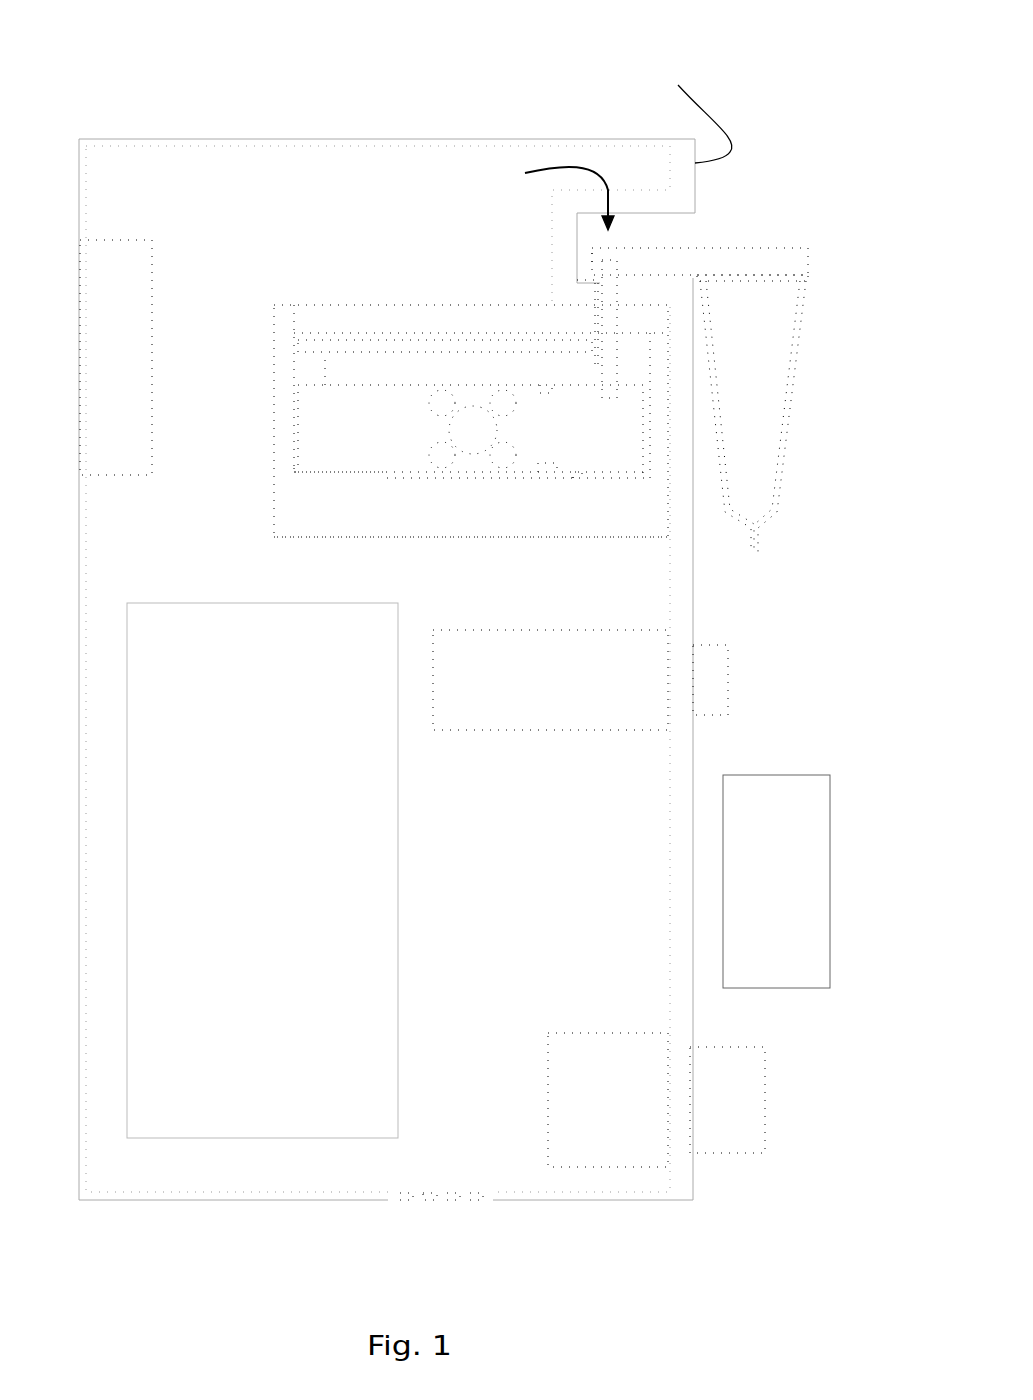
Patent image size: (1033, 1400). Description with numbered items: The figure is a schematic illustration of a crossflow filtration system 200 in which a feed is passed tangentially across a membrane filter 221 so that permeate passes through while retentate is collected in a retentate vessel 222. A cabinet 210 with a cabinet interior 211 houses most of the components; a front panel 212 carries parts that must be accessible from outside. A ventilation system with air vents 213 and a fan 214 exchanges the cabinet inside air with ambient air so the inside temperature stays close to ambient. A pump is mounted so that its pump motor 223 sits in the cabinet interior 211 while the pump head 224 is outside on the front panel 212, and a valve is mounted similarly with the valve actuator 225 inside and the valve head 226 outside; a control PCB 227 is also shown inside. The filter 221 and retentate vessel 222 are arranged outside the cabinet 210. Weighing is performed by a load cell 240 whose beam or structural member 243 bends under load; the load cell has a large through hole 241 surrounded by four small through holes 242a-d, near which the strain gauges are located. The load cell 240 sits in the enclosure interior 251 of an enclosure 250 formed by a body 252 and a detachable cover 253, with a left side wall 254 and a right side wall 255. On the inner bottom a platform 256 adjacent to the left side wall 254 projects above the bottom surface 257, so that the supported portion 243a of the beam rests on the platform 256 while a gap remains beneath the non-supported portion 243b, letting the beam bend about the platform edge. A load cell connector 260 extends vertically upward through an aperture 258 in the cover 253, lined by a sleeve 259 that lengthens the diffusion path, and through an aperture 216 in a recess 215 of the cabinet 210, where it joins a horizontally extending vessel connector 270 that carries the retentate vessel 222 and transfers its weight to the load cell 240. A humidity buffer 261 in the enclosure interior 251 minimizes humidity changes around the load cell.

The crossflow filtration system 200 is at (85, 27).
The cabinet 210 is at (300, 138).
The cabinet interior 211 is at (555, 902).
The front panel 212 is at (690, 107).
The air vents 213 is at (450, 1202).
The fan 214 is at (92, 282).
The recess 215 is at (537, 198).
The aperture 216 is at (617, 283).
The filter 221 is at (776, 881).
The retentate vessel 222 is at (788, 395).
The pump motor 223 is at (550, 680).
The pump head 224 is at (729, 683).
The valve actuator 225 is at (608, 1100).
The valve head 226 is at (727, 1100).
The control PCB 227 is at (262, 870).
The load cell 240 is at (325, 385).
The large through hole 241 is at (450, 430).
The small through holes 242a-d is at (441, 404).
The structural member 243 is at (605, 448).
The supported portion 243a is at (353, 472).
The non-supported portion 243b is at (553, 470).
The enclosure 250 is at (302, 280).
The enclosure interior 251 is at (400, 387).
The body 252 is at (310, 537).
The cover 253 is at (274, 305).
The left side wall 254 is at (274, 393).
The right side wall 255 is at (651, 452).
The platform 256 is at (295, 470).
The bottom surface 257 is at (577, 478).
The aperture 258 is at (598, 305).
The sleeve 259 is at (617, 352).
The load cell connector 260 is at (600, 278).
The humidity buffer 261 is at (300, 341).
The vessel connector 270 is at (810, 255).